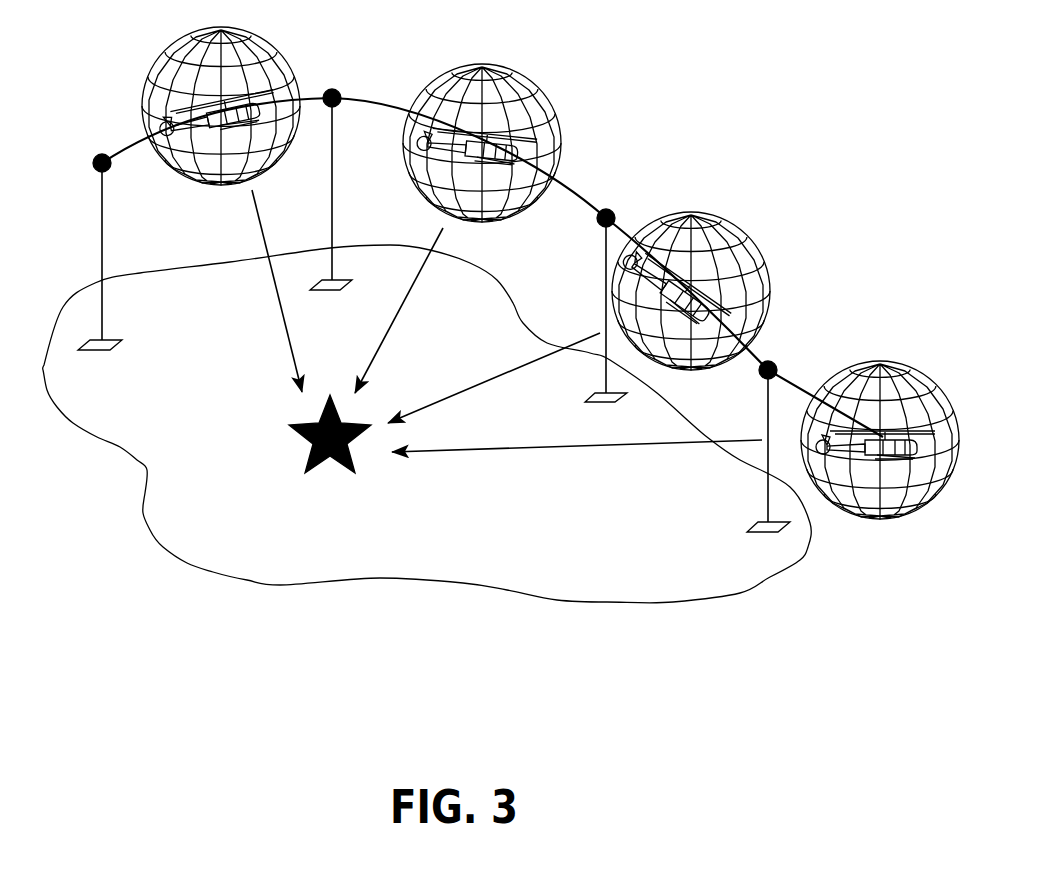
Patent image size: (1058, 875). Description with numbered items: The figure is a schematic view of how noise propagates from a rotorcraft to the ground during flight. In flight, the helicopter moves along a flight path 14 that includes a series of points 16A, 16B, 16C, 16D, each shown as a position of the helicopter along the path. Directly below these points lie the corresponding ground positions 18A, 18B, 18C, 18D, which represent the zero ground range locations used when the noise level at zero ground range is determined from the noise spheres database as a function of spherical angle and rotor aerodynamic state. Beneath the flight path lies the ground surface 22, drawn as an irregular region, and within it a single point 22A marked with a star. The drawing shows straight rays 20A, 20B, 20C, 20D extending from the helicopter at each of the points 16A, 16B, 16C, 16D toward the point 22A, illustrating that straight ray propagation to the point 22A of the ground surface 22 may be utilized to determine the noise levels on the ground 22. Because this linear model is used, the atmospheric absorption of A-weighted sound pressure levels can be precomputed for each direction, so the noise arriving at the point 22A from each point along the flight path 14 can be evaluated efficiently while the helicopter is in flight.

The flight path 14 is at (585, 197).
The point 16A is at (100, 156).
The point 16B is at (335, 90).
The point 16C is at (610, 212).
The point 16D is at (773, 364).
The ground position 18A is at (112, 345).
The ground position 18B is at (348, 291).
The ground position 18C is at (586, 395).
The ground position 18D is at (755, 527).
The first line of sight 20A is at (272, 285).
The second line of sight 20B is at (400, 318).
The third line of sight 20C is at (450, 395).
The fourth line of sight 20D is at (500, 452).
The ground surface 22 is at (512, 567).
The point of ground surface 22A is at (323, 470).